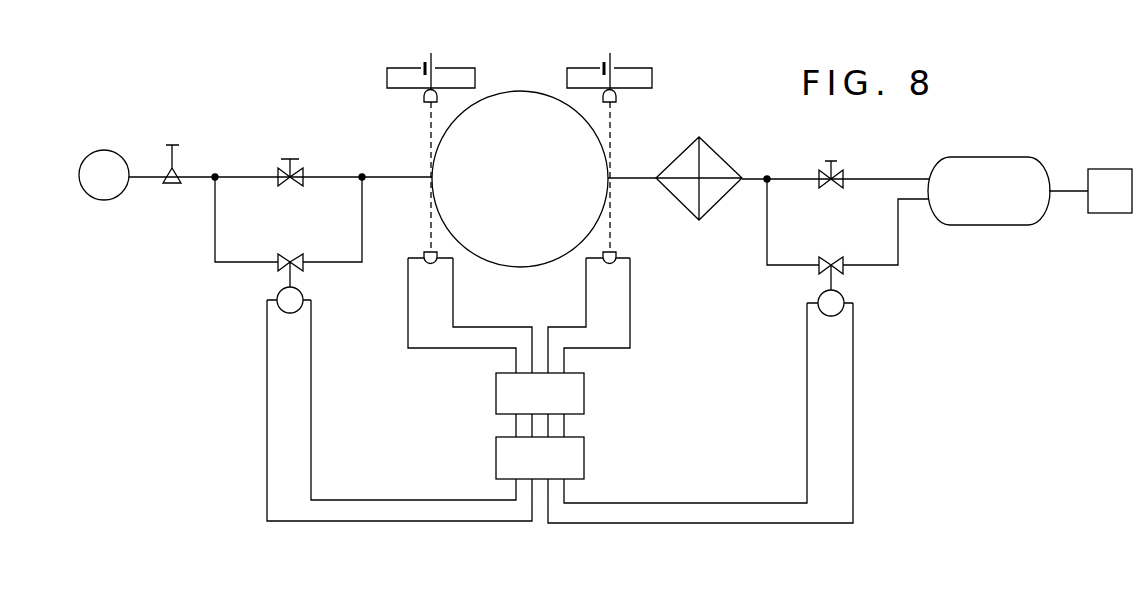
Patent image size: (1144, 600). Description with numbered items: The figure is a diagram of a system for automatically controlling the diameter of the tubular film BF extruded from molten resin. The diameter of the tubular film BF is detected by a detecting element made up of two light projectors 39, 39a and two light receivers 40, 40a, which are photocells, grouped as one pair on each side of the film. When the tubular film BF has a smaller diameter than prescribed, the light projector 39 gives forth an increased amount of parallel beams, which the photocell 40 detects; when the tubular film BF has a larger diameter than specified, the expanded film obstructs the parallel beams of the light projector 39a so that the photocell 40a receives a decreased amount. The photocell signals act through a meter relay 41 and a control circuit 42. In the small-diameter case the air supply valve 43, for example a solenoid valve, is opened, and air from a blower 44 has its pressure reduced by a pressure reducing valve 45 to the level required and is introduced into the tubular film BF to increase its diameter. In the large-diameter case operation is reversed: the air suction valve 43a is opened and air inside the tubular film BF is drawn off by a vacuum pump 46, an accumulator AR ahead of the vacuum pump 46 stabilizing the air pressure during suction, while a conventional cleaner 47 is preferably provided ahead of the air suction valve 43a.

The light projector 39 is at (421, 67).
The light projector 39a is at (613, 68).
The light receiver 40 is at (424, 250).
The light receiver 40a is at (604, 258).
The meter relay 41 is at (584, 399).
The control circuit 42 is at (584, 462).
The air supply valve 43 is at (290, 255).
The air suction valve 43a is at (831, 257).
The blower 44 is at (104, 200).
The pressure reducing valve 45 is at (172, 184).
The vacuum pump 46 is at (1110, 213).
The cleaner 47 is at (717, 199).
The tubular film BF is at (520, 91).
The accumulator AR is at (989, 191).